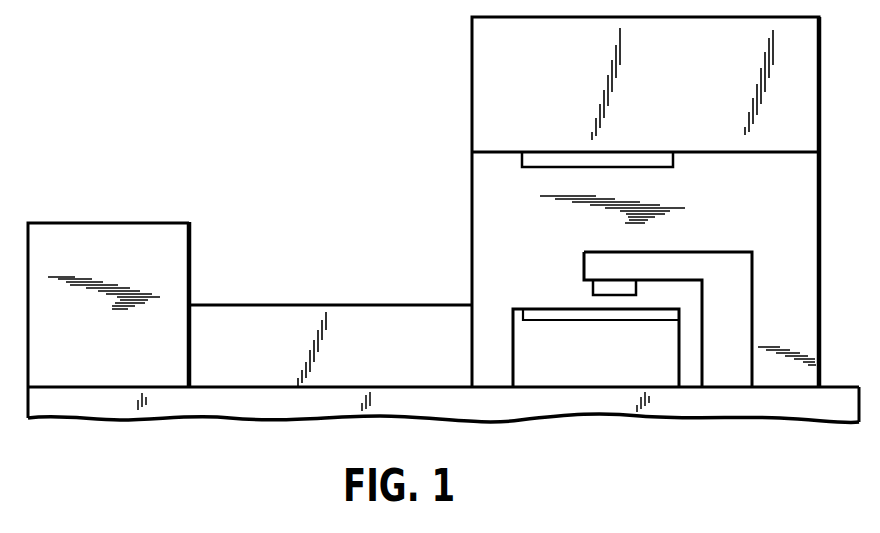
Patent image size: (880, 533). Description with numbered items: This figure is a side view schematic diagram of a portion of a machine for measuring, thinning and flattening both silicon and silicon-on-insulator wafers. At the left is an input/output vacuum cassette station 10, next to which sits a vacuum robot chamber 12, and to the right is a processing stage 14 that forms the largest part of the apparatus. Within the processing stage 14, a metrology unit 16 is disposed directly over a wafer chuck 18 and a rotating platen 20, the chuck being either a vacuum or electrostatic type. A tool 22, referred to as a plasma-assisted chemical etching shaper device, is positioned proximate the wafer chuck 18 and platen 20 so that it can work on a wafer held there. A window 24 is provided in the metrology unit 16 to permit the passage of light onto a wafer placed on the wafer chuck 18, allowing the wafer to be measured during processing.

The input/output vacuum cassette station 10 is at (91, 223).
The vacuum robot chamber 12 is at (238, 305).
The processing stage 14 is at (471, 243).
The metrology unit 16 is at (472, 123).
The wafer chuck 18 is at (561, 302).
The rotating platen 20 is at (513, 333).
The tool 22 is at (592, 290).
The window 24 is at (520, 160).